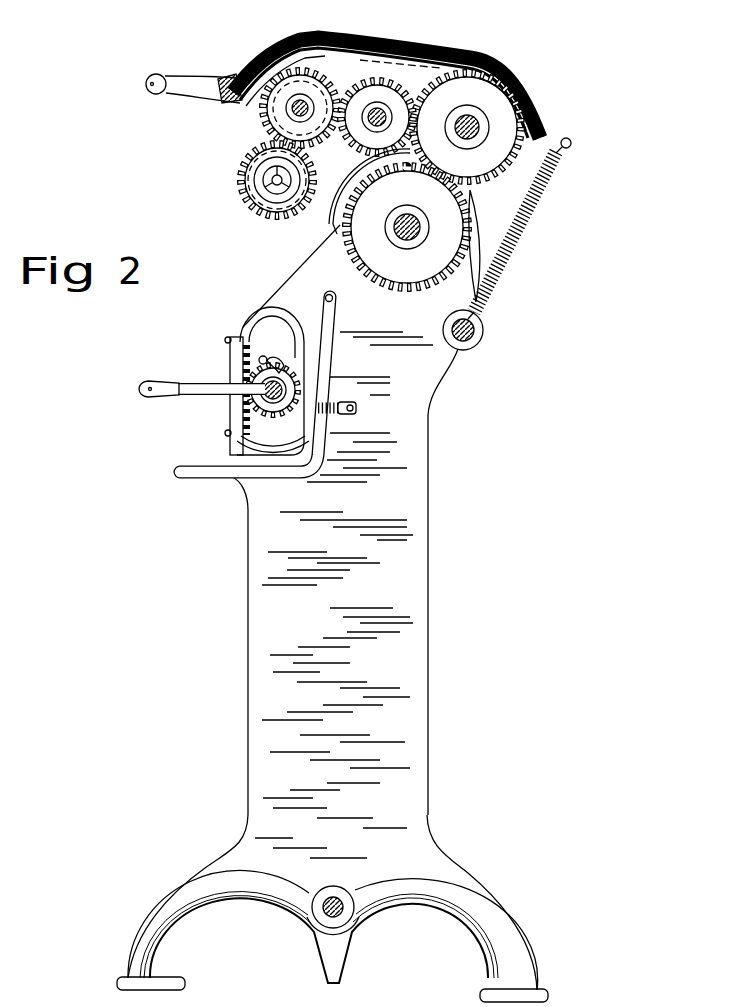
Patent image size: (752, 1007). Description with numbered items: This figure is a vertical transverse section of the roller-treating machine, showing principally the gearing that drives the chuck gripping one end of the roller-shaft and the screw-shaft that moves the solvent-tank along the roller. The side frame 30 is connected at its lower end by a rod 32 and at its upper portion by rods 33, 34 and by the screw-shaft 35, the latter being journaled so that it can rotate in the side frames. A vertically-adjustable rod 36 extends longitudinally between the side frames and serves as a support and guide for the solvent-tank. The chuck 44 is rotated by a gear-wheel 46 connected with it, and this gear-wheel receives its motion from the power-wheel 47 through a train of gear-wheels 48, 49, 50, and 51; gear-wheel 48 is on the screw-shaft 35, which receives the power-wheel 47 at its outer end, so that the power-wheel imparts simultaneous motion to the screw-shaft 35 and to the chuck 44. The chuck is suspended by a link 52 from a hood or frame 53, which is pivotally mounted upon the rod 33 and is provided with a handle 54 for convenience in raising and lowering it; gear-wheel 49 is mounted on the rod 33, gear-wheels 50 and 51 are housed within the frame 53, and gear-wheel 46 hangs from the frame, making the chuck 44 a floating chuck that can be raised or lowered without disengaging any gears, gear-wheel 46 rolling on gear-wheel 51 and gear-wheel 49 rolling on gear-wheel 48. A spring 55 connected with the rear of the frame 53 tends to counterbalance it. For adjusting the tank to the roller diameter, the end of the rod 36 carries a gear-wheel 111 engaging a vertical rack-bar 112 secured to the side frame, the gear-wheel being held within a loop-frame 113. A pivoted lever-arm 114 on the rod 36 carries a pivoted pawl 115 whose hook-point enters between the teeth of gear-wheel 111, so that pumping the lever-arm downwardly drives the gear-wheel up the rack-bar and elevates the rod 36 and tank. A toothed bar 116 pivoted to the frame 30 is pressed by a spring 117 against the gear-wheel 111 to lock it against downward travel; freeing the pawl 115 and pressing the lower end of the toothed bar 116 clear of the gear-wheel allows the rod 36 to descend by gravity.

The side frame 30 is at (428, 616).
The rod 32 is at (339, 912).
The rod 33 is at (473, 133).
The rod 34 is at (474, 330).
The screw-shaft 35 is at (411, 233).
The vertically-adjustable rod 36 is at (262, 393).
The chuck 44 is at (262, 186).
The gear-wheel 46 is at (247, 171).
The power-wheel 47 is at (333, 230).
The gear-wheel 48 is at (407, 227).
The gear-wheel 49 is at (467, 127).
The gear-wheel 50 is at (377, 116).
The gear-wheel 51 is at (262, 108).
The link 52 is at (288, 117).
The hood or frame 53 is at (392, 40).
The handle 54 is at (173, 81).
The spring 55 is at (518, 248).
The gear-wheel 111 is at (275, 417).
The rack-bar 112 is at (236, 360).
The loop-frame 113 is at (256, 319).
The lever-arm 114 is at (176, 393).
The pawl 115 is at (282, 346).
The toothed bar 116 is at (314, 362).
The spring 117 is at (333, 414).